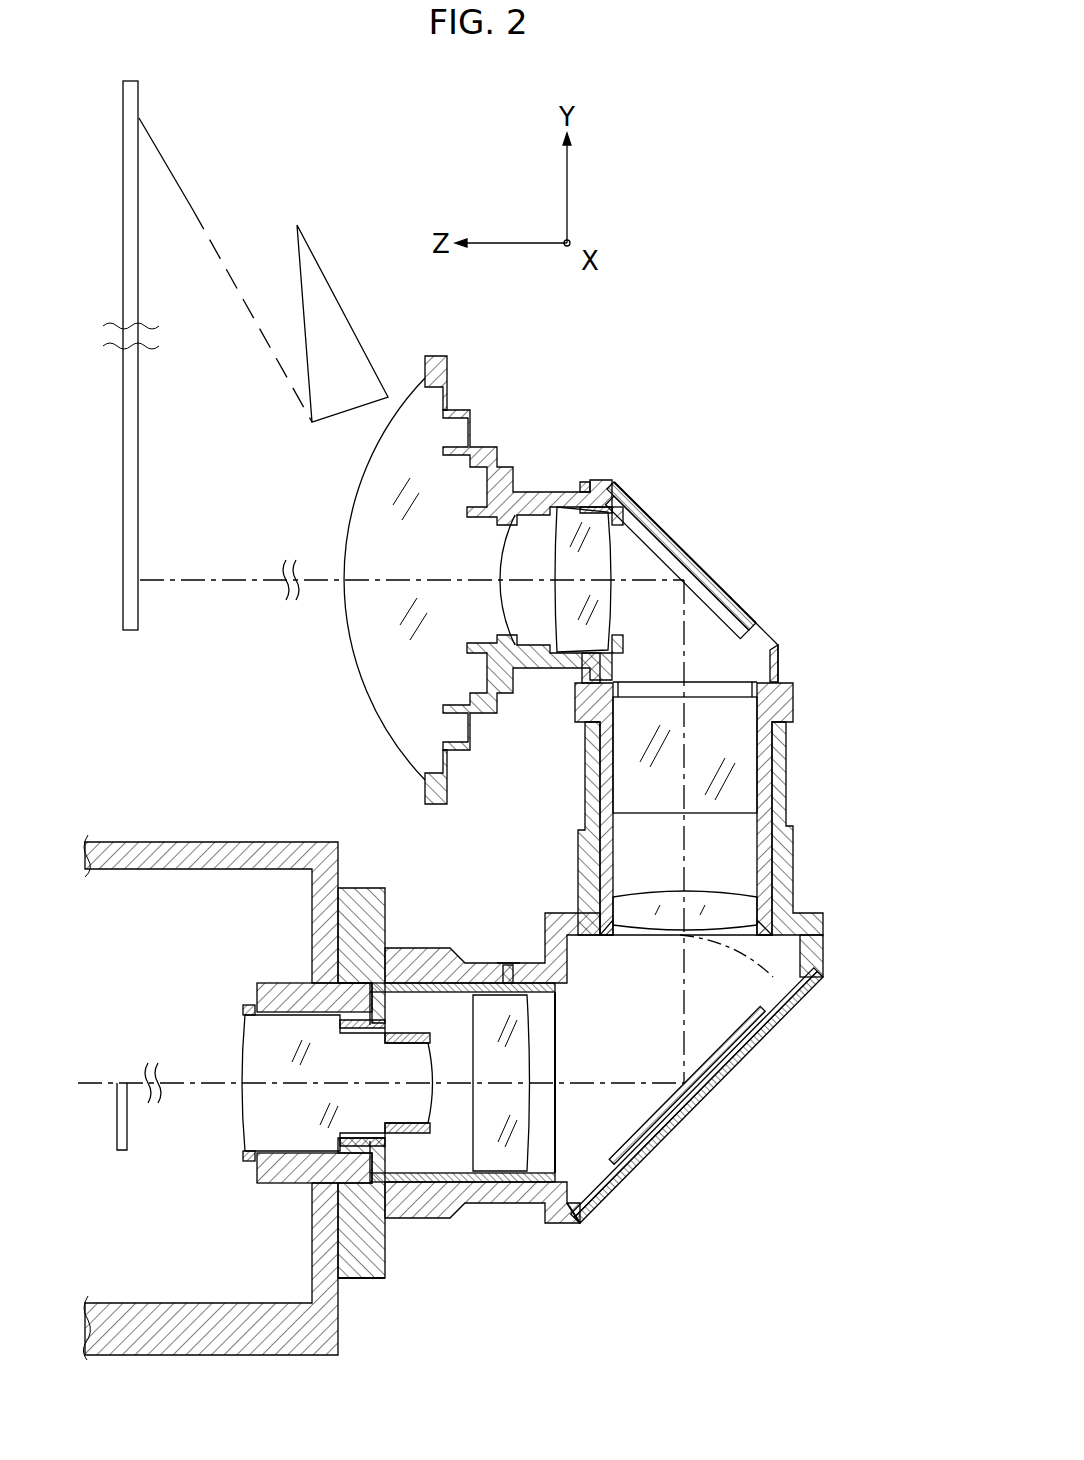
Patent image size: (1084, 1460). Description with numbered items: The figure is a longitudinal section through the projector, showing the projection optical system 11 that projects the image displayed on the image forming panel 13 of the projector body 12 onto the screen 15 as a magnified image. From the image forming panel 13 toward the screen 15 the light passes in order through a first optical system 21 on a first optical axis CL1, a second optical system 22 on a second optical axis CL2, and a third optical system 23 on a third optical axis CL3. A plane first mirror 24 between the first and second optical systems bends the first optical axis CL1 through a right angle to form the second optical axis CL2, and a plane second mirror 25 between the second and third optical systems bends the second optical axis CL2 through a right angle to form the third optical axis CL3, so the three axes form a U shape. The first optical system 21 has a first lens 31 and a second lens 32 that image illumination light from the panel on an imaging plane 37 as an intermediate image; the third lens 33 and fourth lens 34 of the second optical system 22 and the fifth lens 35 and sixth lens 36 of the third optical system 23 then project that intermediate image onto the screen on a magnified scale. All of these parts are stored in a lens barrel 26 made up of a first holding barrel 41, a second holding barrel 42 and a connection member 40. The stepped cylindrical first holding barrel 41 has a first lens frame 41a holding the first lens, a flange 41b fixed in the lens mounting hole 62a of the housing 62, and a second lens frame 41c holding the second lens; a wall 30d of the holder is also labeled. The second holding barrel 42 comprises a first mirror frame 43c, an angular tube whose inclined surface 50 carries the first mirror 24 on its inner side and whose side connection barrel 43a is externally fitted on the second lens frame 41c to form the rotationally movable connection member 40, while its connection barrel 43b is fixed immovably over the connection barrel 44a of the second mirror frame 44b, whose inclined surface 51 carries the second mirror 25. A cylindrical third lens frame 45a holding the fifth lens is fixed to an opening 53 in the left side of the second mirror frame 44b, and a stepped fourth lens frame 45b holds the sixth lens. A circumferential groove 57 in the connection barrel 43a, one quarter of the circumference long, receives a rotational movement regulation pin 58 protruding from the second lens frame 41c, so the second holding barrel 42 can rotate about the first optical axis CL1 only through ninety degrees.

The projection optical system 11 is at (752, 332).
The projector body 12 is at (192, 832).
The image forming panel 13 is at (124, 1150).
The screen 15 is at (131, 113).
The first optical system 21 is at (596, 1136).
The second optical system 22 is at (812, 772).
The third optical system 23 is at (640, 554).
The first mirror 24 is at (708, 1095).
The second mirror 25 is at (735, 602).
The lens barrel 26 is at (607, 470).
The lens holder wall 30d is at (552, 993).
The first lens 31 is at (280, 1123).
The second lens 32 is at (517, 1130).
The third lens 33 is at (695, 892).
The fourth lens 34 is at (697, 710).
The fifth lens 35 is at (567, 527).
The sixth lens 36 is at (403, 430).
The imaging plane 37 is at (742, 960).
The connection member 40 is at (457, 1240).
The first holding barrel 41 is at (384, 1285).
The first lens frame 41a is at (257, 1175).
The flange 41b is at (360, 1262).
The second lens frame 41c is at (446, 1174).
The second holding barrel 42 is at (600, 1223).
The connection barrel 43a is at (487, 1205).
The connection barrel 43b is at (790, 868).
The first mirror frame 43c is at (825, 953).
The connection barrel 44a is at (768, 743).
The second mirror frame 44b is at (613, 484).
The third lens frame 45a is at (531, 505).
The fourth lens frame 45b is at (442, 356).
The inclined surface 50 is at (776, 1026).
The inclined surface 51 is at (692, 558).
The opening 53 is at (603, 647).
The circumferential groove 57 is at (503, 963).
The rotational movement regulation pin 58 is at (512, 965).
The housing 62 is at (312, 842).
The lens mounting hole 62a is at (310, 990).
The first optical axis CL1 is at (190, 1077).
The second optical axis CL2 is at (684, 1038).
The third optical axis CL3 is at (318, 570).